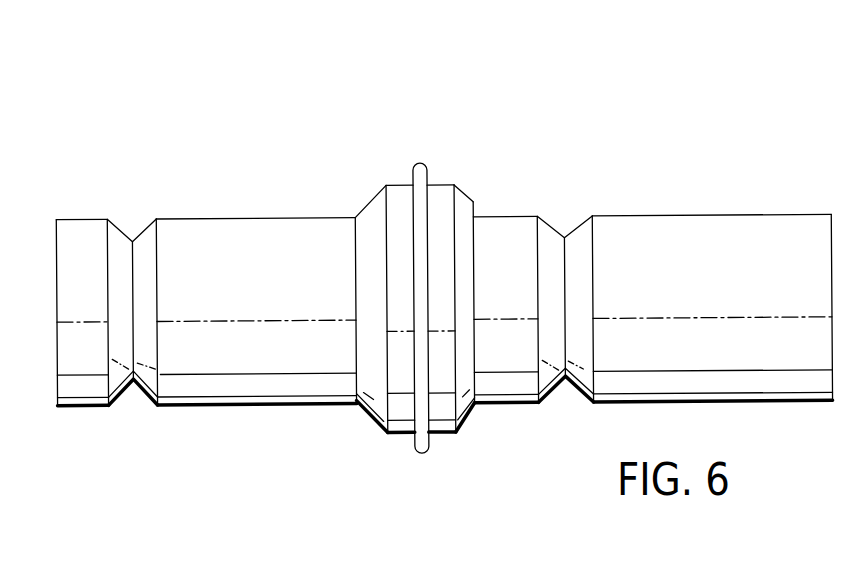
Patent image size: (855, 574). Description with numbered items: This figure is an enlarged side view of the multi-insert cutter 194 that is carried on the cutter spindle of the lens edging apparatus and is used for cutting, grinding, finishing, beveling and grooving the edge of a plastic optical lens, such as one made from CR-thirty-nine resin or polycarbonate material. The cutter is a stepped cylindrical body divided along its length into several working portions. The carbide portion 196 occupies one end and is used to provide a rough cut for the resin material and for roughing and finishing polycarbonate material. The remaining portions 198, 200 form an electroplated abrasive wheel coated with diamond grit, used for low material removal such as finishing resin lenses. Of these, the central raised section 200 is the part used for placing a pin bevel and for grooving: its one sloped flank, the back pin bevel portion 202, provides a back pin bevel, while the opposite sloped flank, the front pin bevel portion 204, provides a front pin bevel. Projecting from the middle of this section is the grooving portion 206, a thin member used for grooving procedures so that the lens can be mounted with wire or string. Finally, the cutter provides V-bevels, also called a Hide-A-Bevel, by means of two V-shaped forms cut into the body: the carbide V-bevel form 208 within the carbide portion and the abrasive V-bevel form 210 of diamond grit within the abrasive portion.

The multi-insert cutter 194 is at (711, 112).
The carbide portion 196 is at (355, 164).
The electroplated abrasive wheel portion 198 is at (830, 164).
The pin bevel and grooving section 200 is at (358, 164).
The back pin bevel portion 202 is at (373, 424).
The front pin bevel portion 204 is at (467, 427).
The grooving portion 206 is at (421, 455).
The carbide V-bevel form 208 is at (108, 420).
The abrasive V-bevel form 210 is at (538, 417).